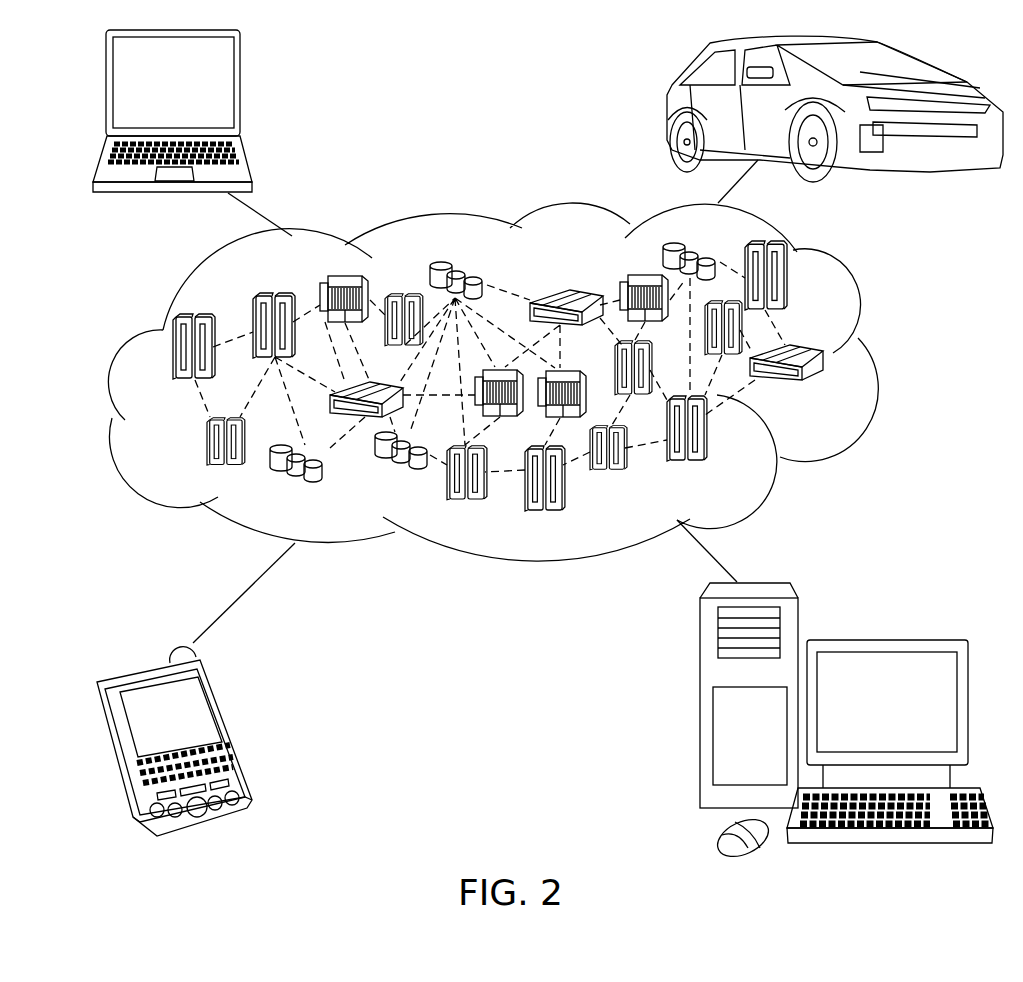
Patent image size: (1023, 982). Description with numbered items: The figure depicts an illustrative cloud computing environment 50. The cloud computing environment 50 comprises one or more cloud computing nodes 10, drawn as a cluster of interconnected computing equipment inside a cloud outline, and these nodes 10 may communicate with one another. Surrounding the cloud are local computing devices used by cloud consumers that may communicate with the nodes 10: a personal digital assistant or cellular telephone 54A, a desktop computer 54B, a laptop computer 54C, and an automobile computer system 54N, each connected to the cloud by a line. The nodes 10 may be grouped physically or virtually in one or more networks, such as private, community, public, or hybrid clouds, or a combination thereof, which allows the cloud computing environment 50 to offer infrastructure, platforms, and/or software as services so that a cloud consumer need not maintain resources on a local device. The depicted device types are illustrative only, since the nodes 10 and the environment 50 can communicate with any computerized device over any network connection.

The cloud computing node 10 is at (826, 388).
The cloud computing environment 50 is at (883, 362).
The personal digital assistant or cellular telephone 54A is at (230, 731).
The desktop computer 54B is at (883, 640).
The laptop computer 54C is at (240, 93).
The automobile computer system 54N is at (670, 108).